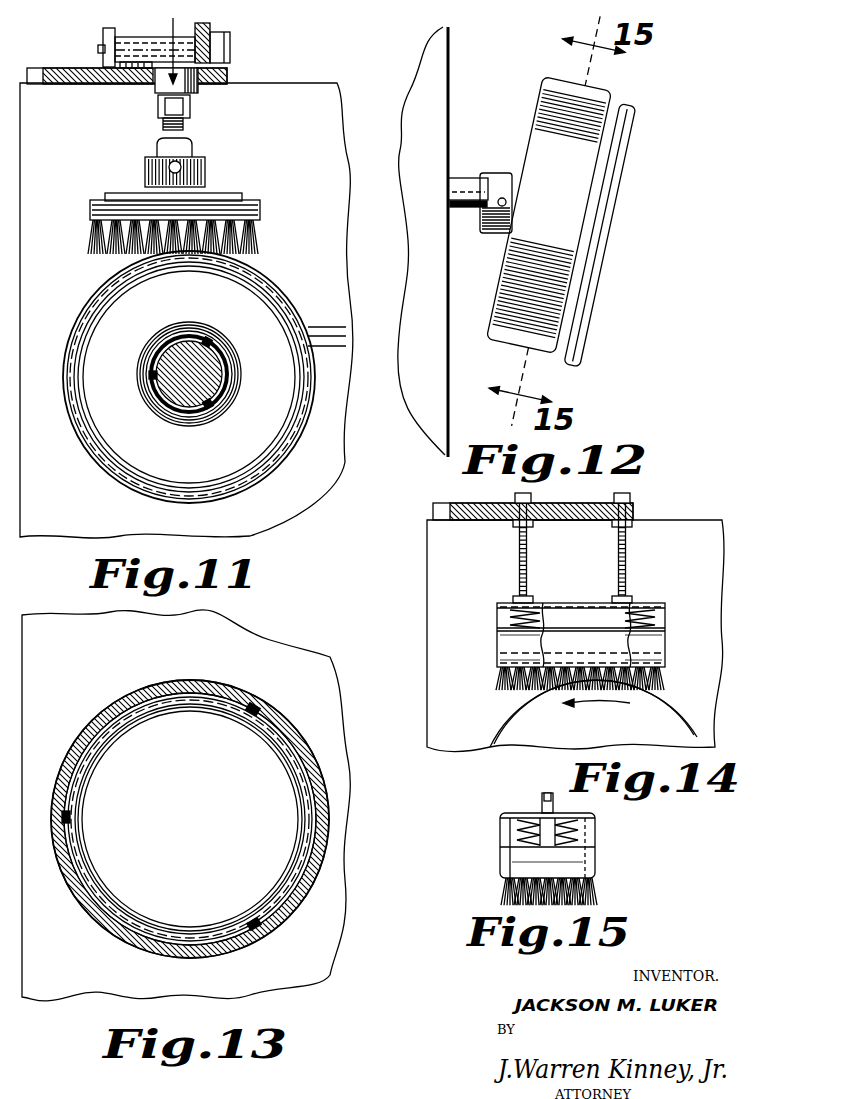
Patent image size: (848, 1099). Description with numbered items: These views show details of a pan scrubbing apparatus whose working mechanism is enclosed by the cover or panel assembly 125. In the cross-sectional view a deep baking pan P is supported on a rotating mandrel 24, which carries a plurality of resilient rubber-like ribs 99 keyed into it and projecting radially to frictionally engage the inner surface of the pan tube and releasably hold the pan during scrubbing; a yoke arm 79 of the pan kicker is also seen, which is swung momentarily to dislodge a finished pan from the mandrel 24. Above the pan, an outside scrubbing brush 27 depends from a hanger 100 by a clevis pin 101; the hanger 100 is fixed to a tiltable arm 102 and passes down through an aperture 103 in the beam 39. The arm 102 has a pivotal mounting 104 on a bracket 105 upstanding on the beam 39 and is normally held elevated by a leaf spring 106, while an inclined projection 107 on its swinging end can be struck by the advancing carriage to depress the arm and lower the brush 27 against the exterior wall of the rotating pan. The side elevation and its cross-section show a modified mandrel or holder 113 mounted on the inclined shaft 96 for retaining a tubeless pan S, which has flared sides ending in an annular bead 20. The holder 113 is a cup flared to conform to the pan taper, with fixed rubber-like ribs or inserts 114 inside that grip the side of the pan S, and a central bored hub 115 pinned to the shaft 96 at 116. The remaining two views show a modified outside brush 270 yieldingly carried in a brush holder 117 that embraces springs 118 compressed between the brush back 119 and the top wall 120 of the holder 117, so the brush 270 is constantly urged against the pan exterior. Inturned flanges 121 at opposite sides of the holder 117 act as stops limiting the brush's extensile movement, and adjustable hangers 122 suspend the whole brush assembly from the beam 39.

In FIG. 12, the annular roll or bead 20 is at (619, 214).
In FIG. 11, the mandrel 24 is at (178, 392).
In FIG. 11, the outside scrubbing brush 27 is at (257, 236).
In FIG. 11, the beam 39 is at (65, 68).
In FIG. 14, the beam 39 is at (468, 503).
In FIG. 11, the yoke arm 79 is at (322, 328).
In FIG. 12, the shaft 96 is at (466, 190).
In FIG. 11, the resilient ribs 99 is at (207, 345).
In FIG. 11, the hanger 100 is at (172, 108).
In FIG. 11, the clevis pin 101 is at (181, 167).
In FIG. 11, the tiltable arm 102 is at (140, 40).
In FIG. 11, the aperture 103 is at (198, 85).
In FIG. 11, the pivotal mounting 104 is at (100, 47).
In FIG. 11, the bracket 105 is at (106, 28).
In FIG. 11, the leaf spring 106 is at (133, 70).
In FIG. 11, the inclined projection 107 is at (203, 24).
In FIG. 12, the mandrel or holder 113 is at (587, 223).
In FIG. 13, the mandrel or holder 113 is at (307, 745).
In FIG. 13, the fixed ribs or inserts 114 is at (252, 712).
In FIG. 12, the central bored hub 115 is at (490, 233).
In FIG. 12, the pin 116 is at (503, 198).
In FIG. 14, the brush holder 117 is at (660, 603).
In FIG. 15, the brush holder 117 is at (598, 833).
In FIG. 14, the springs 118 is at (510, 620).
In FIG. 15, the springs 118 is at (512, 835).
In FIG. 14, the brush back 119 is at (652, 645).
In FIG. 15, the brush back 119 is at (575, 860).
In FIG. 14, the top wall 120 is at (572, 606).
In FIG. 15, the top wall 120 is at (525, 818).
In FIG. 14, the inturned flanges 121 is at (498, 670).
In FIG. 15, the inturned flanges 121 is at (503, 882).
In FIG. 14, the adjustable hangers 122 is at (518, 540).
In FIG. 15, the adjustable hangers 122 is at (546, 793).
In FIG. 11, the cover or panel assembly 125 is at (325, 210).
In FIG. 12, the cover or panel assembly 125 is at (430, 203).
In FIG. 14, the cover or panel assembly 125 is at (433, 577).
In FIG. 13, the cover or panel assembly 125 is at (313, 670).
In FIG. 14, the brush 270 is at (668, 678).
In FIG. 15, the brush 270 is at (585, 897).
In FIG. 11, the baking pan P is at (282, 455).
In FIG. 14, the baking pan P is at (692, 742).
In FIG. 12, the tubeless pan S is at (611, 280).
In FIG. 13, the tubeless pan S is at (285, 783).